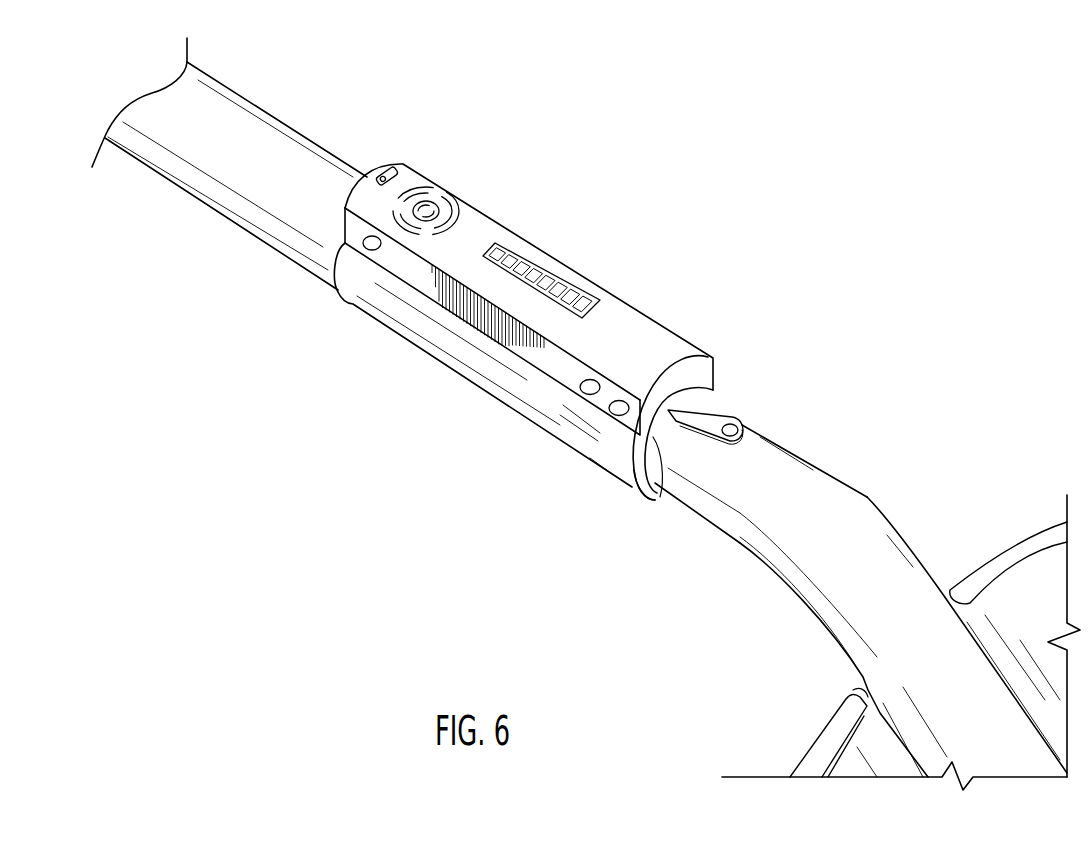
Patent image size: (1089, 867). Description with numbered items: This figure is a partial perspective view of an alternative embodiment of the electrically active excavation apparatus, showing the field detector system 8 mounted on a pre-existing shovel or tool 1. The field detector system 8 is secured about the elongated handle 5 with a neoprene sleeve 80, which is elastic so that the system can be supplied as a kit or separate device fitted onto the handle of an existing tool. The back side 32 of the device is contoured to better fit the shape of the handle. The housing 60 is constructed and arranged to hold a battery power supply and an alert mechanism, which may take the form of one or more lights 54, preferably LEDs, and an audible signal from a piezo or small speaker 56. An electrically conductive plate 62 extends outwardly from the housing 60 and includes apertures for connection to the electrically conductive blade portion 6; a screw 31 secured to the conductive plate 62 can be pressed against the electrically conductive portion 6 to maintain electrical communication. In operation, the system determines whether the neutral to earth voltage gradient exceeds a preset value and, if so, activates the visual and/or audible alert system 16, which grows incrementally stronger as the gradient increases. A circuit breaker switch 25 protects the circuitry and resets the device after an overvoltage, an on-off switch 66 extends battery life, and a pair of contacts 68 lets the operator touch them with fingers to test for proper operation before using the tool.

The pre-existing shovel or tool 1 is at (797, 483).
The elongated handle 5 is at (297, 153).
The electrically conductive portion 6 is at (907, 570).
The field detector system 8 is at (514, 296).
The visual and/or audible alert system 16 is at (483, 238).
The circuit breaker switch 25 is at (373, 252).
The screw 31 is at (736, 424).
The back side 32 is at (661, 497).
The lights 54 is at (583, 280).
The piezo or small speaker 56 is at (453, 197).
The housing 60 is at (684, 350).
The electrically conductive plate 62 is at (708, 410).
The on-off switch 66 is at (380, 165).
The pair of contacts 68 is at (583, 395).
The neoprene sleeve 80 is at (445, 343).